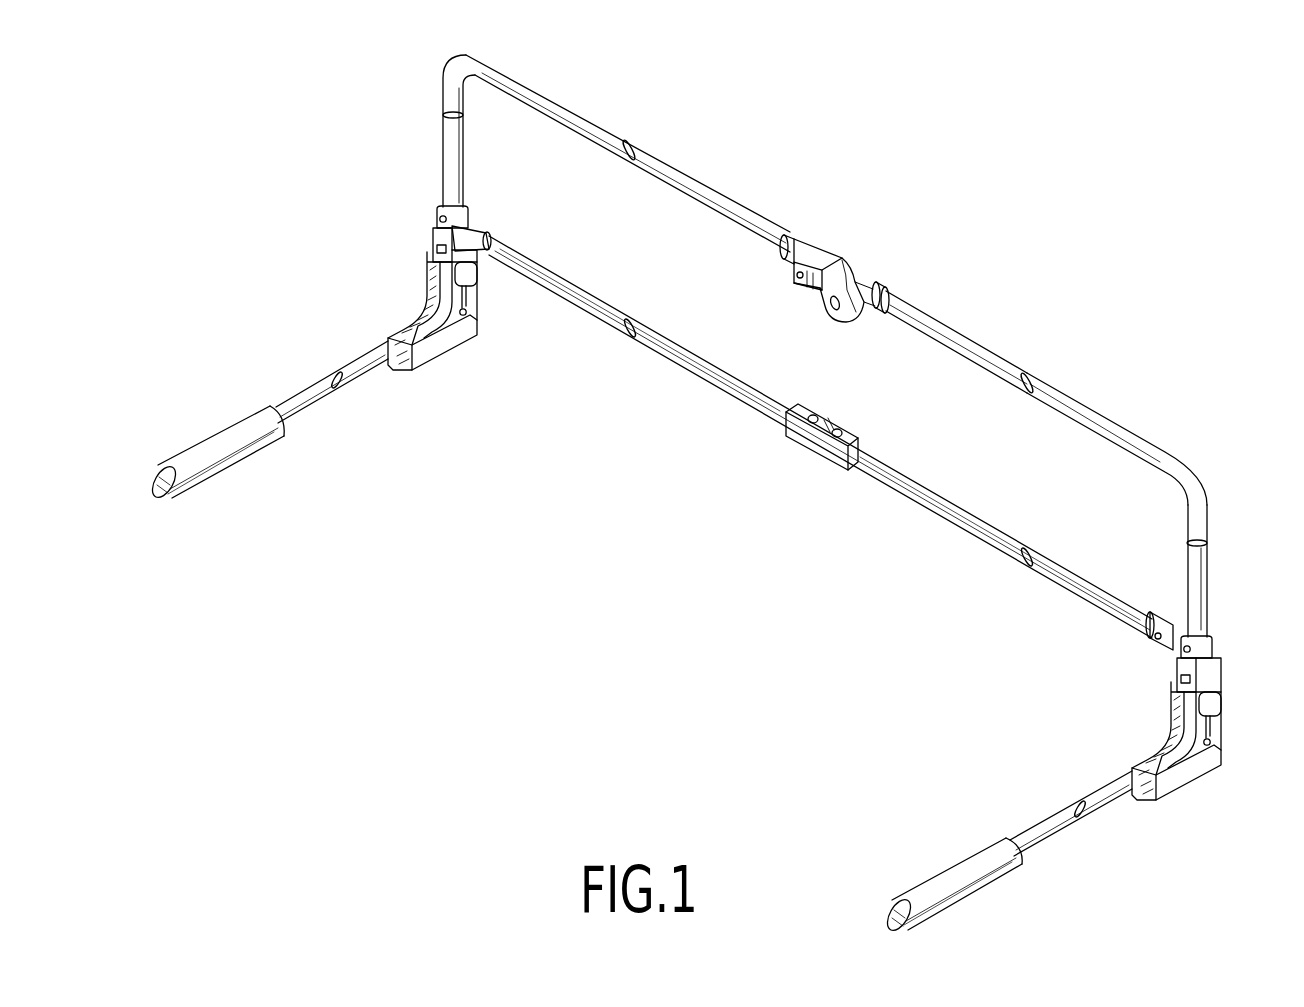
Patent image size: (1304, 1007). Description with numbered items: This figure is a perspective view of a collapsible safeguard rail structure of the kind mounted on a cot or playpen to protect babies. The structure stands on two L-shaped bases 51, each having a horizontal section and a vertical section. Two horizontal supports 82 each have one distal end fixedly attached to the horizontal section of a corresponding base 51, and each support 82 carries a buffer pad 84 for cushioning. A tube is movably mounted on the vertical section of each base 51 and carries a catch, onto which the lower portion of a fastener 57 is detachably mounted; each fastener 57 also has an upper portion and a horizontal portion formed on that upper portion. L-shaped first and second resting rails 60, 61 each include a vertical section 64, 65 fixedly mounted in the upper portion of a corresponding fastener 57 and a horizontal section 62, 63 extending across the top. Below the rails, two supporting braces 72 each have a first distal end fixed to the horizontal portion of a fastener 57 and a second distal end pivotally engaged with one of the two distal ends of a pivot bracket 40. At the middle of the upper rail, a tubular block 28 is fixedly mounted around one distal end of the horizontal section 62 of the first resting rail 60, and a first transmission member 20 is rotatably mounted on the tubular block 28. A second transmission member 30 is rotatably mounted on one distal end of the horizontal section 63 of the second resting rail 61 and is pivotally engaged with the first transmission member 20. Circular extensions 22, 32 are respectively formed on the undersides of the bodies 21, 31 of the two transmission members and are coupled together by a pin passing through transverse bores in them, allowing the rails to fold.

The first transmission member 20 is at (793, 285).
The body 21 is at (830, 267).
The circular extension 22 is at (838, 320).
The tubular block 28 is at (796, 233).
The second transmission member 30 is at (893, 278).
The body 31 is at (863, 270).
The circular extension 32 is at (865, 312).
The pivot bracket 40 is at (802, 457).
The L-shaped base 51 is at (1207, 783).
The fastener 57 is at (1220, 667).
The first resting rail 60 is at (676, 150).
The second resting rail 61 is at (1012, 348).
The horizontal section 62 is at (560, 100).
The horizontal section 63 is at (1122, 428).
The vertical section 64 is at (450, 153).
The vertical section 65 is at (1200, 572).
The supporting brace 72 is at (977, 523).
The horizontal support 82 is at (1093, 797).
The buffer pad 84 is at (960, 873).